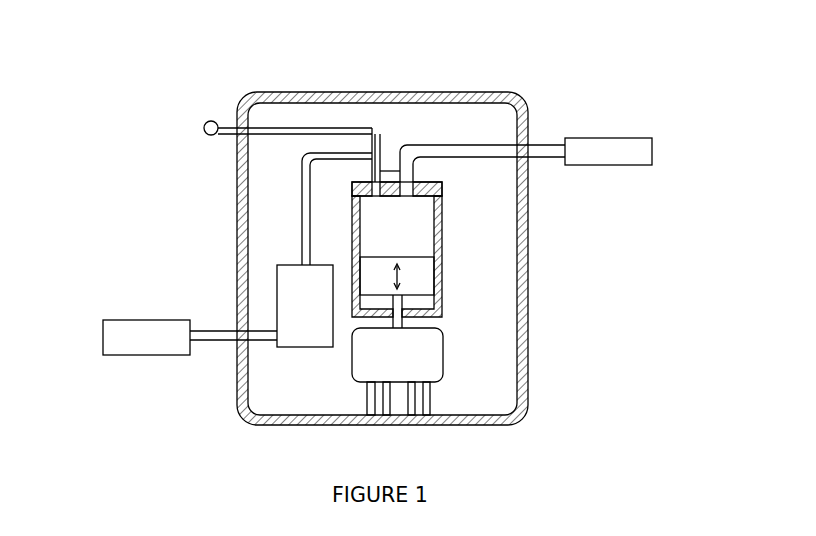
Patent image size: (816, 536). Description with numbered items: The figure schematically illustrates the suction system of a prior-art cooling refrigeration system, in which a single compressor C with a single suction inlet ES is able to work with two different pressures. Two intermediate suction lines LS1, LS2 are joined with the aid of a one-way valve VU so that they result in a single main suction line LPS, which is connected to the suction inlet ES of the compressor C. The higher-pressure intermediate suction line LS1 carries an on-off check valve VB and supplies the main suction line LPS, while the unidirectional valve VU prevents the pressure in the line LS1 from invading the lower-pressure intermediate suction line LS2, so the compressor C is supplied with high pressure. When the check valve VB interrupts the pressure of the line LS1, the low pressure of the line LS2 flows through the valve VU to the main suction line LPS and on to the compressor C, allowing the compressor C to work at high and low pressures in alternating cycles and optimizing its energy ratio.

The check valve VB is at (205, 125).
The intermediate suction line LS1 is at (280, 133).
The intermediate suction line LS2 is at (305, 213).
The one-way valve VU is at (373, 158).
The main suction line LPS is at (406, 172).
The suction inlet ES is at (362, 196).
The compressor C is at (437, 258).